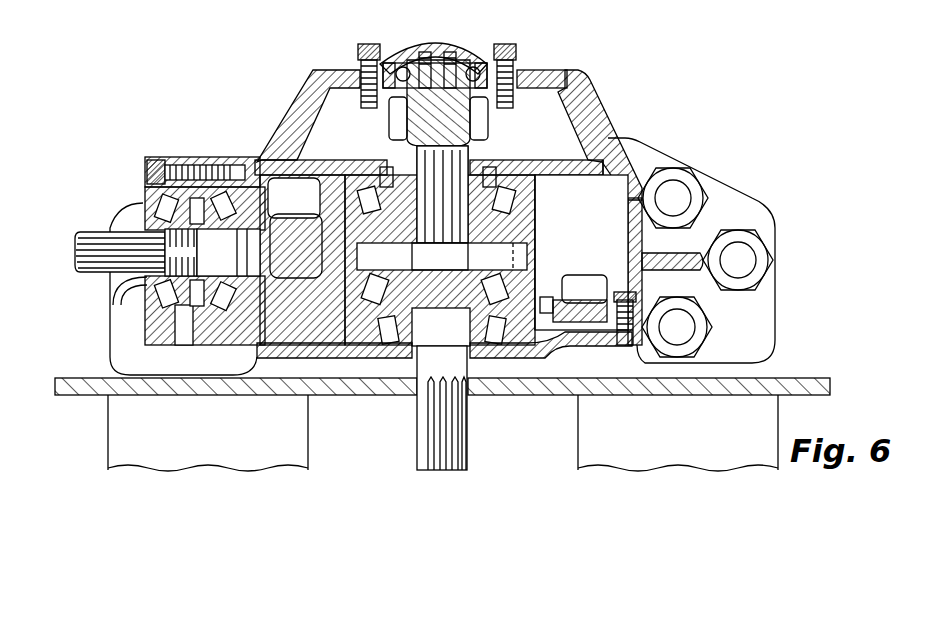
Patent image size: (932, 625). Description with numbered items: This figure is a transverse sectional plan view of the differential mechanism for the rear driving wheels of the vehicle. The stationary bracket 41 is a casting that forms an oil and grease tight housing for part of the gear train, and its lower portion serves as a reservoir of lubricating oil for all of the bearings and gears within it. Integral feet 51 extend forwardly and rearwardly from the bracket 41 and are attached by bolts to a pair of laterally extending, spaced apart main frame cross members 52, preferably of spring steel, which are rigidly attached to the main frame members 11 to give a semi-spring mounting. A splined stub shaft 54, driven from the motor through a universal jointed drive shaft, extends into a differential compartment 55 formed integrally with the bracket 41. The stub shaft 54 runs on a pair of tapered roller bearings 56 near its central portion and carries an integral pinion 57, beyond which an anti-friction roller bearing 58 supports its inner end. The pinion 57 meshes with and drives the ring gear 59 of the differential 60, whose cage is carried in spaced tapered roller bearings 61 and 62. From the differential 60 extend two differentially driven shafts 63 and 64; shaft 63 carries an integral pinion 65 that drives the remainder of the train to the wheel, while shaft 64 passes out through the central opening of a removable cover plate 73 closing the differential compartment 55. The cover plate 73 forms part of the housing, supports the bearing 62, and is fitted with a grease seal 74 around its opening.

The main frame members 11 is at (562, 396).
The stationary bracket 41 is at (602, 112).
The integral feet 51 is at (110, 352).
The main frame cross members 52 is at (443, 433).
The splined stub shaft 54 is at (213, 160).
The differential compartment 55 is at (581, 252).
The tapered roller bearings 56 is at (217, 297).
The pinion 57 is at (290, 210).
The anti-friction roller bearing 58 is at (333, 172).
The ring gear 59 is at (293, 290).
The differential 60 is at (542, 214).
The tapered roller bearing 61 is at (498, 190).
The tapered roller bearing 62 is at (398, 352).
The differentially driven shaft 63 is at (422, 147).
The differentially driven shaft 64 is at (441, 389).
The integral pinion 65 is at (488, 118).
The removable cover plate 73 is at (517, 352).
The grease seal 74 is at (410, 352).